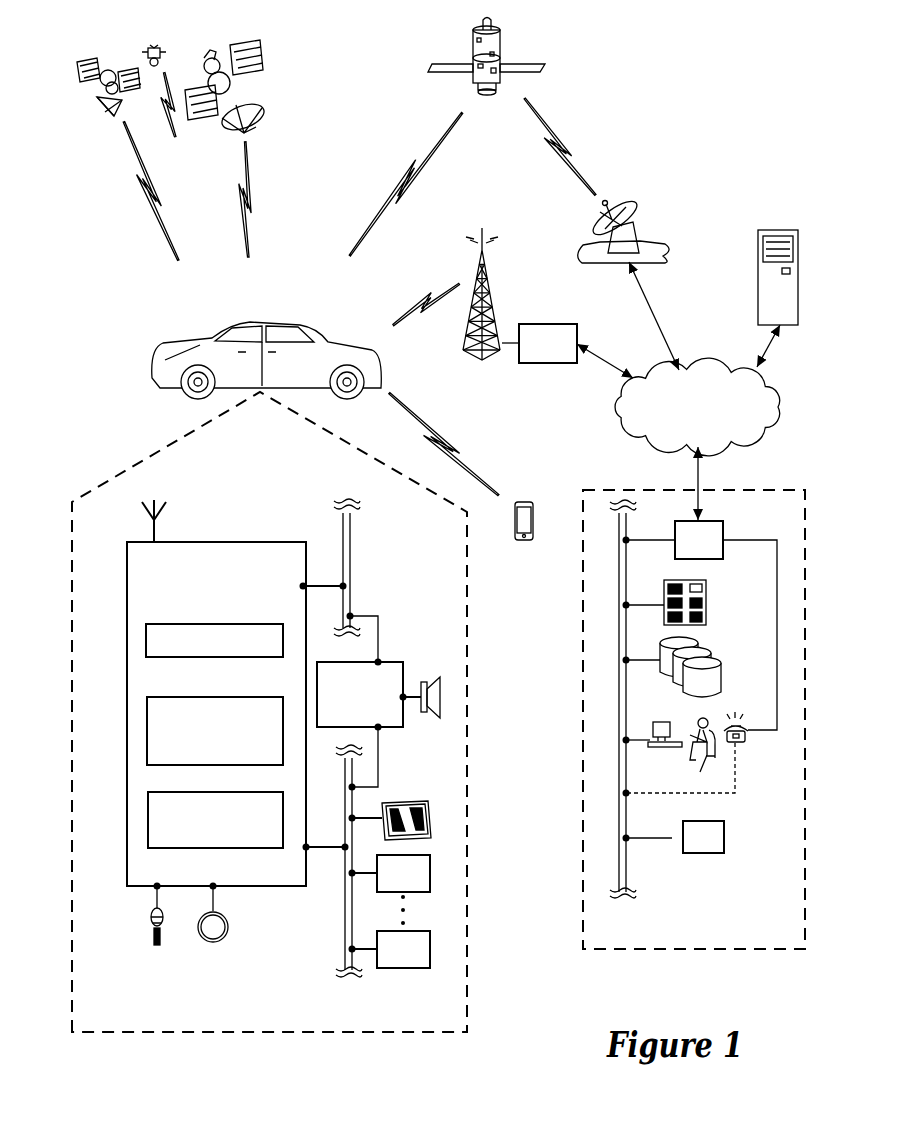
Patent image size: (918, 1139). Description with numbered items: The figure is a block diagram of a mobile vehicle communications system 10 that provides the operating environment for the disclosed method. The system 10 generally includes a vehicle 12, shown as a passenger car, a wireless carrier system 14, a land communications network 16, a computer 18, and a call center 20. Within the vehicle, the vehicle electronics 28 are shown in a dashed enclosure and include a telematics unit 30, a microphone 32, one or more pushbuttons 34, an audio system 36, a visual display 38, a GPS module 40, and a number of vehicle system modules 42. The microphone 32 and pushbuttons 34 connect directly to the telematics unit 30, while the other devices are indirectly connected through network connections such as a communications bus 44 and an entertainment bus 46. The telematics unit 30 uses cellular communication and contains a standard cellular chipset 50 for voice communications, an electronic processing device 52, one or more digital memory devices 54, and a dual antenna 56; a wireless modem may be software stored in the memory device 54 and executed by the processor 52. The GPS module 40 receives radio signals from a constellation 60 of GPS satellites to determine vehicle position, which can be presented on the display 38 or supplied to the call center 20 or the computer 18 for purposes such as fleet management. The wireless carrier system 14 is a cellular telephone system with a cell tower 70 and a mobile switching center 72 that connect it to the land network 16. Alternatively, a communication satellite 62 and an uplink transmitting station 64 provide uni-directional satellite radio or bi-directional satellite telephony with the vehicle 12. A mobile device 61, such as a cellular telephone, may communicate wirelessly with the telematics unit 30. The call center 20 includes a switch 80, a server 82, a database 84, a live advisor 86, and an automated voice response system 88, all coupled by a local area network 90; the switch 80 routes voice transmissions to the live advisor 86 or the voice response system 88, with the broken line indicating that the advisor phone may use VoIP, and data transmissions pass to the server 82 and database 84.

The mobile vehicle communications system 10 is at (724, 59).
The vehicle 12 is at (153, 371).
The wireless carrier system 14 is at (471, 365).
The land communications network 16 is at (697, 439).
The computer 18 is at (798, 290).
The call center 20 is at (683, 949).
The vehicle electronics 28 is at (260, 1032).
The telematics unit 30 is at (265, 542).
The microphone 32 is at (148, 921).
The pushbutton 34 is at (230, 922).
The audio system 36 is at (378, 723).
The visual display 38 is at (403, 802).
The GPS module 40 is at (390, 873).
The vehicle system module 42 is at (390, 949).
The communications bus 44 is at (345, 918).
The entertainment bus 46 is at (352, 557).
The cellular chipset 50 is at (214, 640).
The electronic processing device 52 is at (215, 731).
The digital memory device 54 is at (215, 820).
The dual antenna 56 is at (150, 530).
The constellation of GPS satellites 60 is at (300, 108).
The mobile device 61 is at (535, 532).
The communication satellite 62 is at (502, 43).
The uplink transmitting station 64 is at (650, 236).
The cell tower 70 is at (490, 296).
The mobile switching center 72 is at (567, 351).
The switch 80 is at (700, 625).
The server 82 is at (708, 605).
The database 84 is at (724, 672).
The live advisor 86 is at (690, 760).
The automated voice response system 88 is at (674, 837).
The local area network 90 is at (630, 876).